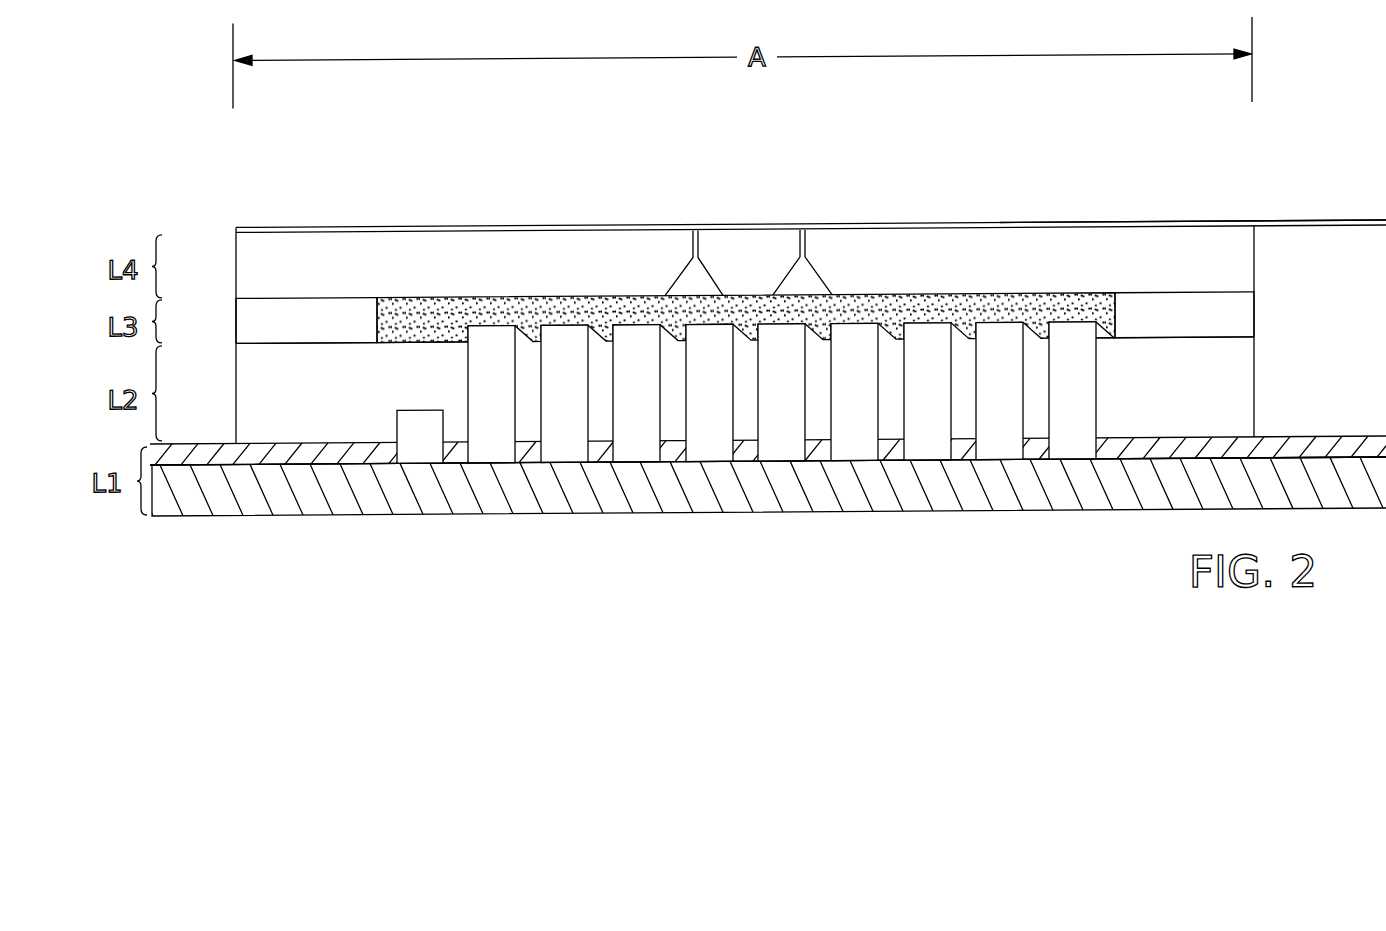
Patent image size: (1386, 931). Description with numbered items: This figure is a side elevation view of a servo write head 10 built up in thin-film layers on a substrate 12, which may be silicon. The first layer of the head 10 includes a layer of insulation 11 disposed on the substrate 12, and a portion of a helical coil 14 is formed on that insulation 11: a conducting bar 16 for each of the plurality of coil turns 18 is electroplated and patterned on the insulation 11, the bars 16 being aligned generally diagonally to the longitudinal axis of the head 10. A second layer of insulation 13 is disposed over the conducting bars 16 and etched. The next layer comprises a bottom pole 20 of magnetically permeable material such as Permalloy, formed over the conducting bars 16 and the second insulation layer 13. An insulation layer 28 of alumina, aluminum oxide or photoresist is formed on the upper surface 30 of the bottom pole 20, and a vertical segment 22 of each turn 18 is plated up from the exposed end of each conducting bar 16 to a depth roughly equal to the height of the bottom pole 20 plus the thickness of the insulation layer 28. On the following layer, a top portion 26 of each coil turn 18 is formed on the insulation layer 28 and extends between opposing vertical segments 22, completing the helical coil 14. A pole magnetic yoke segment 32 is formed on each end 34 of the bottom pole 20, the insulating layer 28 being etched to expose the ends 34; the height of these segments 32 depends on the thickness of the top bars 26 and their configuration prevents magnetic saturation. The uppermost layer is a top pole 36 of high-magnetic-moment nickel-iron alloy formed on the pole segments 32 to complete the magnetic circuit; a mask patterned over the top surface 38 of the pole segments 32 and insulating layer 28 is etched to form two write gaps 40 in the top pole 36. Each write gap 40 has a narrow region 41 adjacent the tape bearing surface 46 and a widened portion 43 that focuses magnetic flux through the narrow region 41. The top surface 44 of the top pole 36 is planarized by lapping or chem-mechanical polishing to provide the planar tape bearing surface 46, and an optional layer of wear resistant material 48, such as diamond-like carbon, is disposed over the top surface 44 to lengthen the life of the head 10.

The servo write head 10 is at (206, 194).
The layer of insulation 11 is at (283, 485).
The substrate 12 is at (789, 591).
The second layer of insulation 13 is at (338, 452).
The coil 14 is at (1108, 404).
The conducting bar 16 is at (538, 452).
The coil turns 18 is at (878, 403).
The bottom pole 20 is at (248, 400).
The vertical segment 22 is at (662, 402).
The top portion 26 is at (1083, 324).
The insulation layer 28 is at (1035, 308).
The upper surface 30 is at (405, 344).
The pole magnetic yoke segment 32 is at (248, 327).
The end 34 is at (308, 345).
The top pole 36 is at (1199, 272).
The top surface 38 is at (303, 298).
The write gap 40 is at (749, 235).
The narrow region 41 is at (805, 242).
The widened portion 43 is at (692, 278).
The top surface 44 is at (432, 230).
The tape bearing surface 46 is at (1115, 224).
The layer of wear resistant material 48 is at (388, 232).